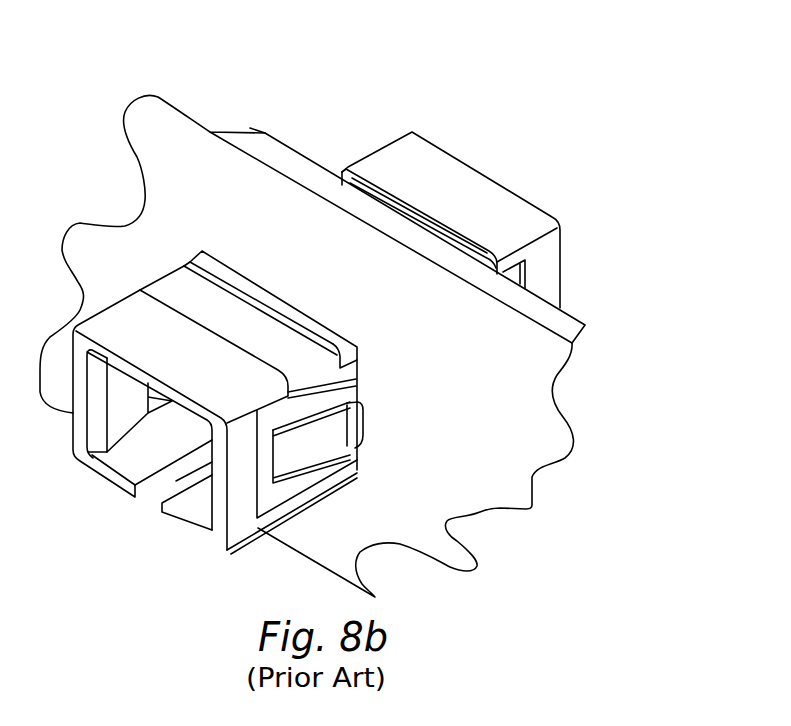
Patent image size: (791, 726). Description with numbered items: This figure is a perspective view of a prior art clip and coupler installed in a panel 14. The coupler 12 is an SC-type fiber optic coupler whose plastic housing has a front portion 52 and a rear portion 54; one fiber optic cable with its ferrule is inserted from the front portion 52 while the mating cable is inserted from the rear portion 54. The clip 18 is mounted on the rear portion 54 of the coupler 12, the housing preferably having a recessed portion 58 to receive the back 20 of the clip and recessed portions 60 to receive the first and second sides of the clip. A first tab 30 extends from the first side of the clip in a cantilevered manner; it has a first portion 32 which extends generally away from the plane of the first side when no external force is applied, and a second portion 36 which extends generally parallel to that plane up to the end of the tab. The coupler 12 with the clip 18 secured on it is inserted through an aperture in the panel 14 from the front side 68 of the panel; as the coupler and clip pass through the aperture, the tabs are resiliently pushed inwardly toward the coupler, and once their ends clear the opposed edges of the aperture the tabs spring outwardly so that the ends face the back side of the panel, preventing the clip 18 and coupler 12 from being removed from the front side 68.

The coupler 12 is at (479, 195).
The panel 14 is at (279, 146).
The clip 18 is at (244, 384).
The back 20 is at (212, 312).
The first tab 30 is at (328, 443).
The first portion 32 is at (302, 438).
The second portion 36 is at (362, 427).
The front portion 52 is at (366, 160).
The rear portion 54 is at (117, 297).
The recessed portion 58 is at (395, 208).
The recessed portions 60 is at (522, 281).
The front side 68 is at (501, 393).